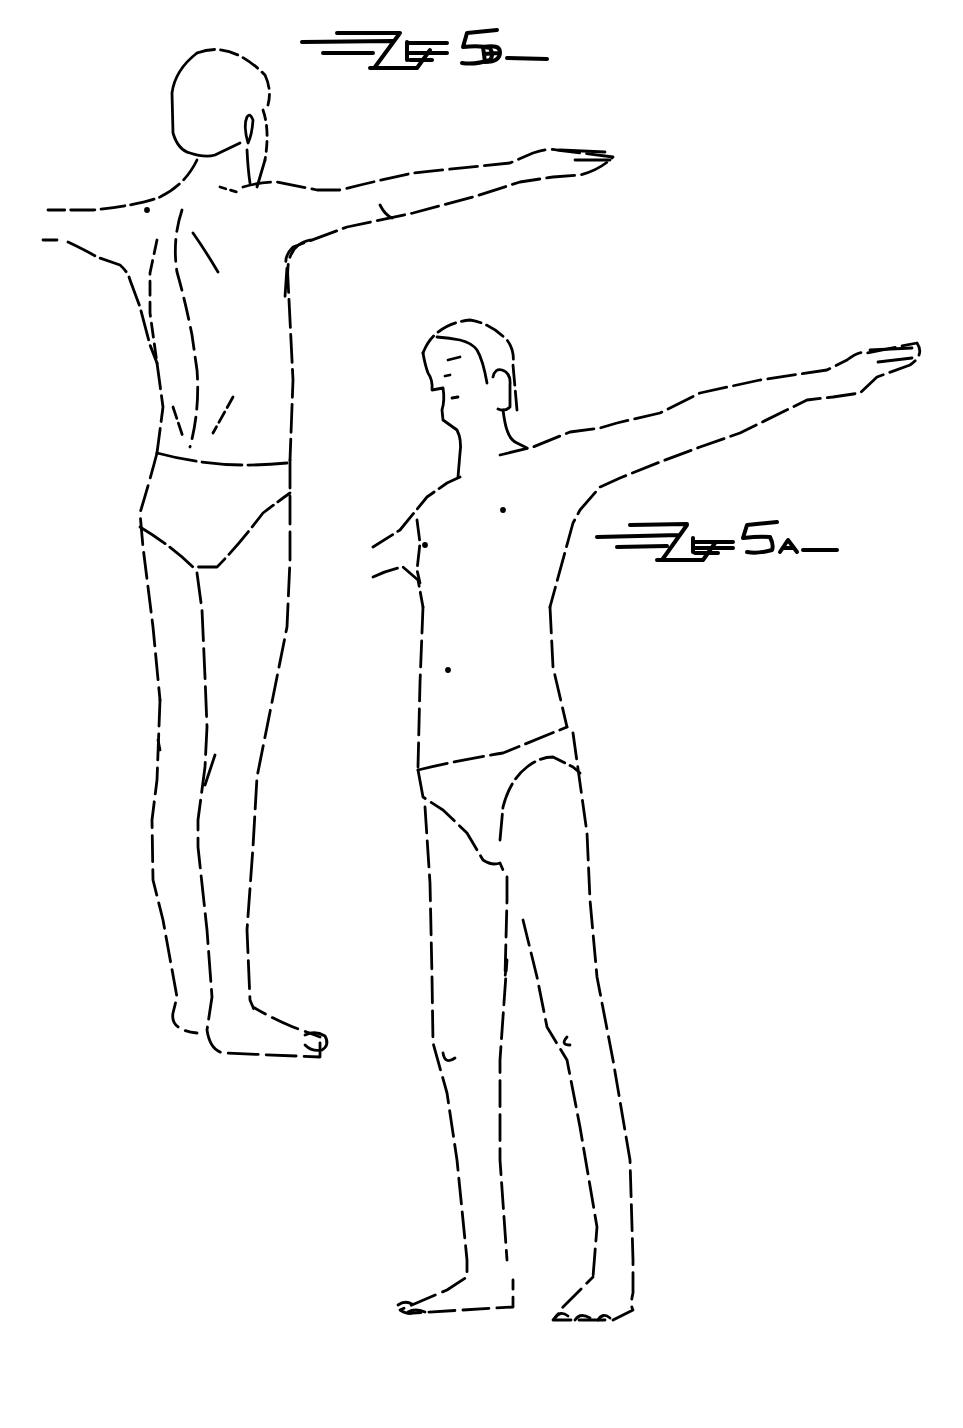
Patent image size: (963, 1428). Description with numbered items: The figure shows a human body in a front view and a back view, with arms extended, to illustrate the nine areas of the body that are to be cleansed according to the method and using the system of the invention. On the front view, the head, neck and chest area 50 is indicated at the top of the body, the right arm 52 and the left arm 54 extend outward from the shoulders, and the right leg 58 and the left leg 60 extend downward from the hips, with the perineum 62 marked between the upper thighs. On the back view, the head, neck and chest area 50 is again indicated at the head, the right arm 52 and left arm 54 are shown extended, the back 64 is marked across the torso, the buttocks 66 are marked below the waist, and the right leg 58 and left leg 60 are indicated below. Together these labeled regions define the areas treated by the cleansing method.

In FIG. 5B, the head, neck and chest area 50 is at (160, 101).
In FIG. 5A, the head, neck and chest area 50 is at (493, 325).
In FIG. 5B, the right arm 52 is at (350, 186).
In FIG. 5A, the right arm 52 is at (385, 523).
In FIG. 5B, the left arm 54 is at (93, 196).
In FIG. 5A, the left arm 54 is at (617, 405).
In FIG. 5B, the right leg 58 is at (268, 645).
In FIG. 5A, the right leg 58 is at (445, 953).
In FIG. 5B, the left leg 60 is at (165, 620).
In FIG. 5A, the left leg 60 is at (575, 950).
In FIG. 5A, the perineum 62 is at (505, 847).
In FIG. 5B, the back 64 is at (178, 290).
In FIG. 5B, the buttocks 66 is at (190, 507).